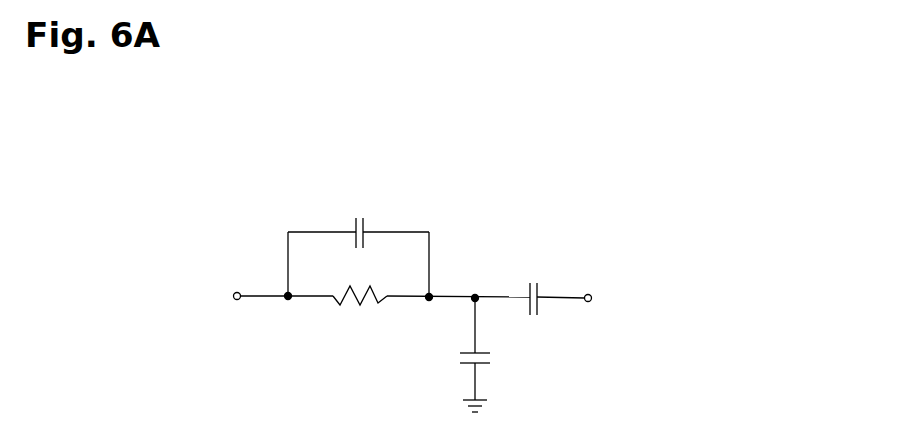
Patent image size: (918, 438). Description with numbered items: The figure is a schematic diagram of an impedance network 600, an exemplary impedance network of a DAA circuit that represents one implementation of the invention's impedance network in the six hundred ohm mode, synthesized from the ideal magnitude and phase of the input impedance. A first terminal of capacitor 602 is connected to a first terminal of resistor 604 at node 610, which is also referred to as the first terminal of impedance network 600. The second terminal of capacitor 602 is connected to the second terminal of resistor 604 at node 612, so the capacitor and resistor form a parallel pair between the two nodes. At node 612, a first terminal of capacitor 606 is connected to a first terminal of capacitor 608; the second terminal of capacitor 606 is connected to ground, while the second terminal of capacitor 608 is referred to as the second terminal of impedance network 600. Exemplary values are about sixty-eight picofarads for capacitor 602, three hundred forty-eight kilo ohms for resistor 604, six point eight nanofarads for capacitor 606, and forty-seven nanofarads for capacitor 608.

The impedance network 600 is at (802, 86).
The capacitor 602 is at (363, 222).
The resistor 604 is at (381, 304).
The capacitor 606 is at (484, 350).
The capacitor 608 is at (542, 293).
The node 610 is at (287, 302).
The node 612 is at (431, 302).